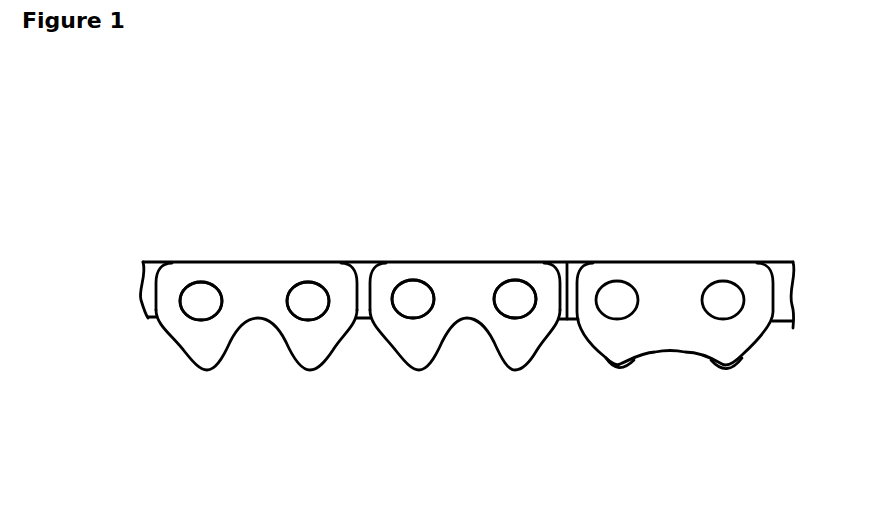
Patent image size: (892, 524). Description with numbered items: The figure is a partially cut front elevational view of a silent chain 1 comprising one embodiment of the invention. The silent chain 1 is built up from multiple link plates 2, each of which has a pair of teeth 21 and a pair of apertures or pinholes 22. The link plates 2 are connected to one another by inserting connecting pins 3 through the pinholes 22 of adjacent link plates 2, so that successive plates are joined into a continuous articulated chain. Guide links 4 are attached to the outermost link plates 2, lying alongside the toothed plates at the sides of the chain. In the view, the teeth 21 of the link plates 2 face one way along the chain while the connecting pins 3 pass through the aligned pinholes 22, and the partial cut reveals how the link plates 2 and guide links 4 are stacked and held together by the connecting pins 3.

The silent chain 1 is at (418, 197).
The link plate 2 is at (195, 269).
The teeth 21 is at (203, 361).
The pinholes 22 is at (212, 287).
The connecting pin 3 is at (298, 310).
The guide link 4 is at (674, 278).